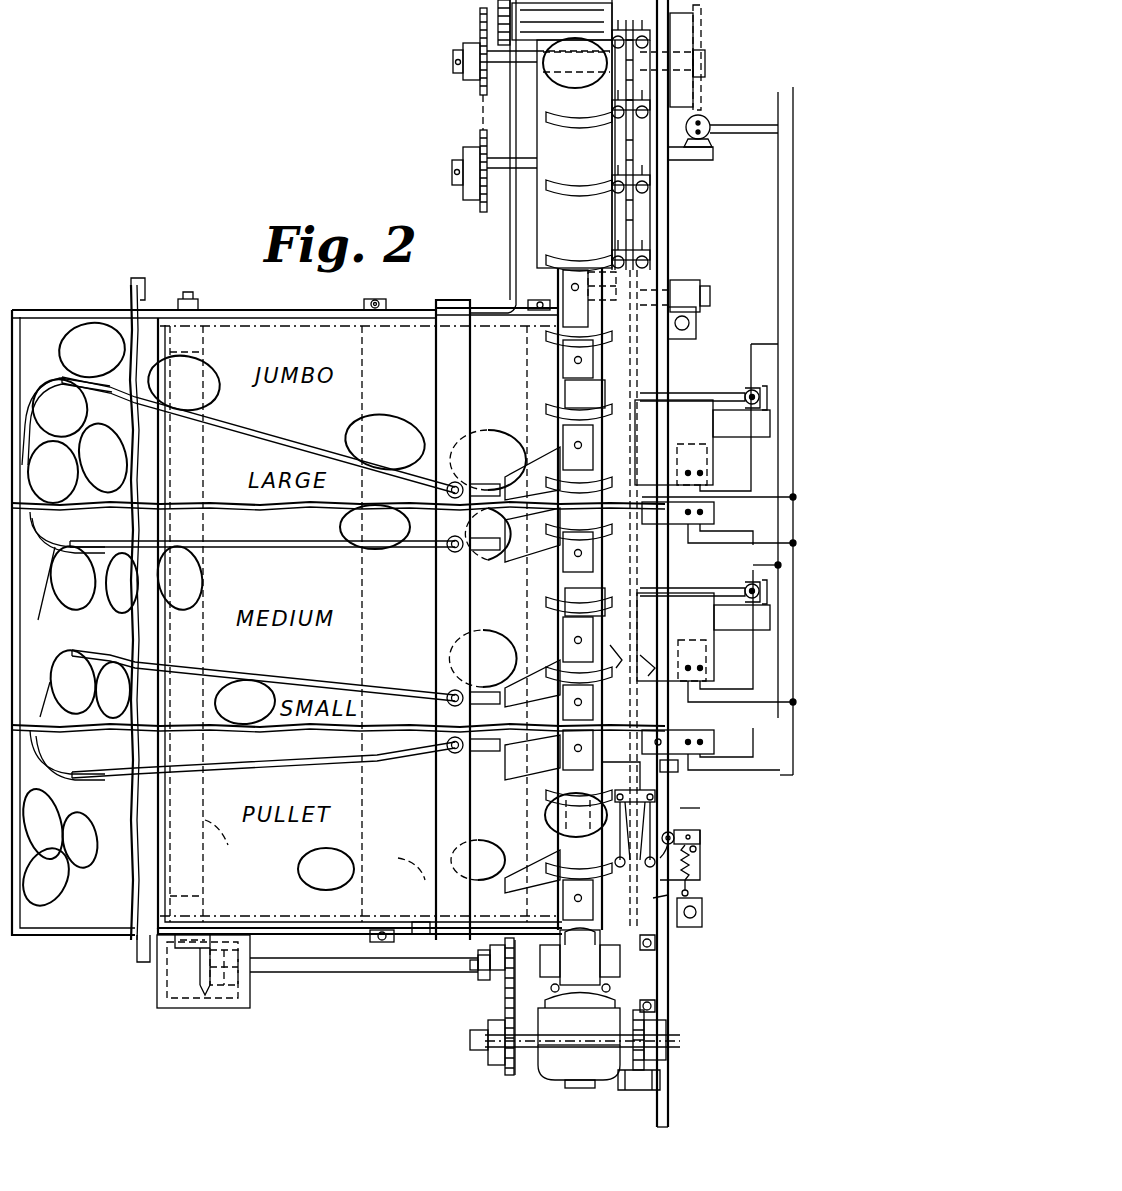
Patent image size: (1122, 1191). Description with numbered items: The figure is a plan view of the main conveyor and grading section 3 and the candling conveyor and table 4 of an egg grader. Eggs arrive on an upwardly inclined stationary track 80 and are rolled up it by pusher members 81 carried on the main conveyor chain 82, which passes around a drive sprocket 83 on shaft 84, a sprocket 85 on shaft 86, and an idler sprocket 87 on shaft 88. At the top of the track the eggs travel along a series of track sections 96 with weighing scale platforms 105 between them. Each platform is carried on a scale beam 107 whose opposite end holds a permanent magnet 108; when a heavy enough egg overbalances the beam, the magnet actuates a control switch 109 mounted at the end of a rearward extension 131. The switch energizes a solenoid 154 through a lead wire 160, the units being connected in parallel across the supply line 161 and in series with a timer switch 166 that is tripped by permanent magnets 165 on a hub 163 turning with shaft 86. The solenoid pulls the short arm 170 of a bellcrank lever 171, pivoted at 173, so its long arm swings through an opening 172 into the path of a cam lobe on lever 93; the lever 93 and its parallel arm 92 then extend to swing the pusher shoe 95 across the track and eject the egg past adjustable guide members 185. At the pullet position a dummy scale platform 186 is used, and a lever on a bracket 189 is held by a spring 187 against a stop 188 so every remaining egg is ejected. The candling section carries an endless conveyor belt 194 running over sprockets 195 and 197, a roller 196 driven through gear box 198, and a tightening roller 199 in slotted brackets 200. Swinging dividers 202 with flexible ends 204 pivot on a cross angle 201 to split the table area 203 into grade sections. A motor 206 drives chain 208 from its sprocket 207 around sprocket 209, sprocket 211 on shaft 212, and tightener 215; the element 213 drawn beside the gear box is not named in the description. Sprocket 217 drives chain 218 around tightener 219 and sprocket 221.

The main conveyor and grading section 3 is at (725, 932).
The candling conveyor and table 4 is at (276, 310).
The stationary shelf or track 80 is at (581, 135).
The pusher members or bars 81 is at (585, 125).
The main conveyor chain 82 is at (638, 238).
The drive sprocket 83 is at (648, 1030).
The shaft 84 is at (590, 1038).
The sprocket 85 is at (626, 80).
The shaft 86 is at (698, 42).
The idler sprocket 87 is at (680, 300).
The shaft 88 is at (652, 268).
The arm of ejector linkage 92 is at (614, 644).
The lever of ejector linkage 93 is at (690, 333).
The pusher shoe 95 is at (627, 828).
The track sections 96 is at (568, 287).
The weighing scale platform 105 is at (572, 390).
The scale beam 107 is at (700, 590).
The permanent magnet 108 is at (728, 395).
The control switch 109 is at (750, 588).
The rearward extension 131 is at (732, 440).
The solenoid 154 is at (690, 444).
The lead wire 160 is at (726, 496).
The supply line 161 is at (797, 90).
The hub 163 is at (678, 26).
The permanent magnets 165 is at (698, 72).
The timer switch 166 is at (708, 120).
The short arm 170 is at (700, 832).
The bellcrank lever 171 is at (702, 912).
The opening 172 is at (690, 893).
The pivot 173 is at (676, 770).
The adjustable guide members 185 is at (520, 548).
The dummy scale platform 186 is at (640, 772).
The spring 187 is at (700, 860).
The stop 188 is at (700, 848).
The bracket 189 is at (690, 818).
The endless conveyor belt 194 is at (302, 318).
The sprockets of idler roller 195 is at (538, 325).
The roller 196 is at (234, 841).
The sprockets of drive roller 197 is at (188, 916).
The gear box 198 is at (233, 1010).
The tightening roller 199 is at (413, 875).
The vertically slotted brackets 200 is at (370, 936).
The angle 201 is at (472, 812).
The swinging dividers 202 is at (288, 448).
The candling conveyor and table area 203 is at (88, 918).
The flexible material 204 is at (67, 579).
The motor 206 is at (560, 1070).
The motor drive sprocket 207 is at (490, 975).
The roller chain 208 is at (505, 1015).
The drive sprocket 209 is at (505, 1070).
The sprocket 211 is at (420, 932).
The shaft 212 is at (351, 970).
The ratchet 213 is at (197, 985).
The idler sprocket 215 is at (505, 1000).
The sprocket 217 is at (480, 85).
The chain 218 is at (480, 125).
The tightener sprocket 219 is at (483, 212).
The sprocket 221 is at (480, 12).